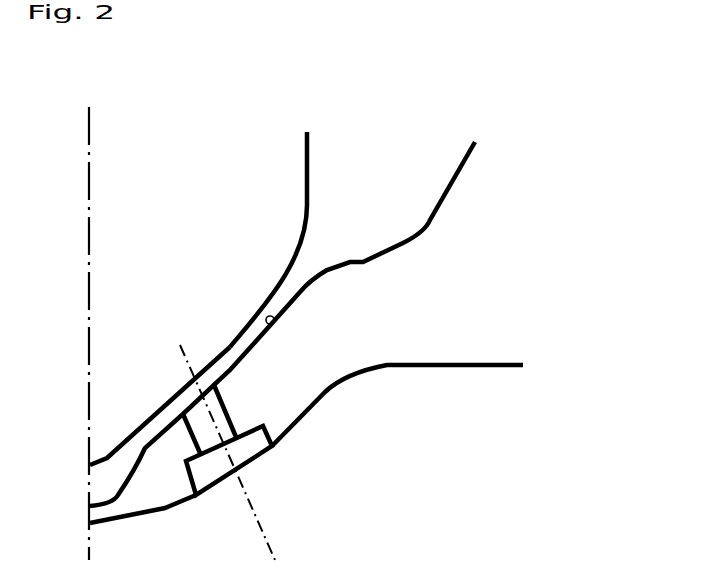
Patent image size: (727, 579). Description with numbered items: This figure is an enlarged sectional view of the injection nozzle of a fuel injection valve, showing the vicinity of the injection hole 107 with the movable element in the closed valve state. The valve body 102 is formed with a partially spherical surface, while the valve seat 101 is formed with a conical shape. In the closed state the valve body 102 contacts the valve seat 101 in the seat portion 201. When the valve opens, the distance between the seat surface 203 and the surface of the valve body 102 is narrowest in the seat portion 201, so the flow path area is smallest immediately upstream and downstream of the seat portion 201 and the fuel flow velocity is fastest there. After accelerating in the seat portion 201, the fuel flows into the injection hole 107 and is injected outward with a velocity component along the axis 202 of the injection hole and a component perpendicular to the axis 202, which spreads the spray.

The valve seat 101 is at (437, 323).
The valve body 102 is at (182, 180).
The injection hole 107 is at (227, 425).
The seat portion 201 is at (247, 333).
The axis of the injection hole 202 is at (255, 510).
The seat surface 203 is at (274, 320).